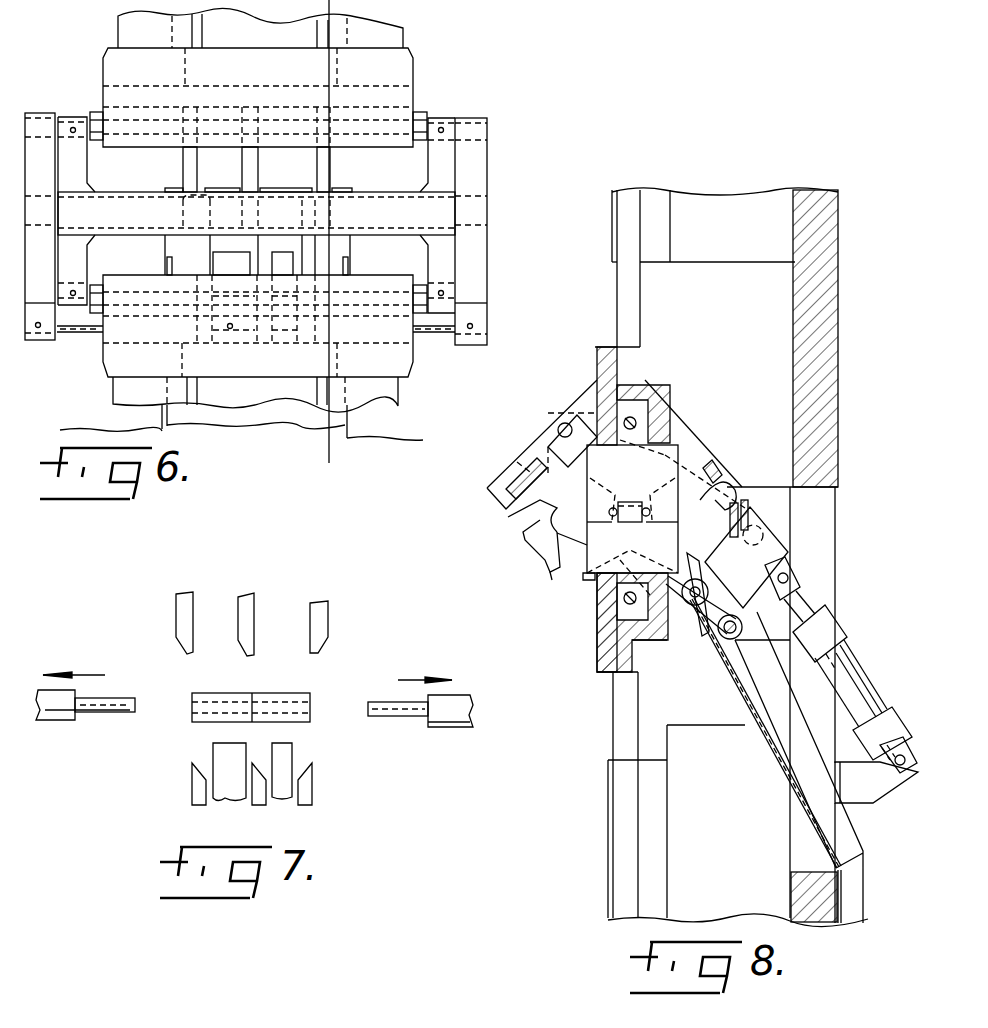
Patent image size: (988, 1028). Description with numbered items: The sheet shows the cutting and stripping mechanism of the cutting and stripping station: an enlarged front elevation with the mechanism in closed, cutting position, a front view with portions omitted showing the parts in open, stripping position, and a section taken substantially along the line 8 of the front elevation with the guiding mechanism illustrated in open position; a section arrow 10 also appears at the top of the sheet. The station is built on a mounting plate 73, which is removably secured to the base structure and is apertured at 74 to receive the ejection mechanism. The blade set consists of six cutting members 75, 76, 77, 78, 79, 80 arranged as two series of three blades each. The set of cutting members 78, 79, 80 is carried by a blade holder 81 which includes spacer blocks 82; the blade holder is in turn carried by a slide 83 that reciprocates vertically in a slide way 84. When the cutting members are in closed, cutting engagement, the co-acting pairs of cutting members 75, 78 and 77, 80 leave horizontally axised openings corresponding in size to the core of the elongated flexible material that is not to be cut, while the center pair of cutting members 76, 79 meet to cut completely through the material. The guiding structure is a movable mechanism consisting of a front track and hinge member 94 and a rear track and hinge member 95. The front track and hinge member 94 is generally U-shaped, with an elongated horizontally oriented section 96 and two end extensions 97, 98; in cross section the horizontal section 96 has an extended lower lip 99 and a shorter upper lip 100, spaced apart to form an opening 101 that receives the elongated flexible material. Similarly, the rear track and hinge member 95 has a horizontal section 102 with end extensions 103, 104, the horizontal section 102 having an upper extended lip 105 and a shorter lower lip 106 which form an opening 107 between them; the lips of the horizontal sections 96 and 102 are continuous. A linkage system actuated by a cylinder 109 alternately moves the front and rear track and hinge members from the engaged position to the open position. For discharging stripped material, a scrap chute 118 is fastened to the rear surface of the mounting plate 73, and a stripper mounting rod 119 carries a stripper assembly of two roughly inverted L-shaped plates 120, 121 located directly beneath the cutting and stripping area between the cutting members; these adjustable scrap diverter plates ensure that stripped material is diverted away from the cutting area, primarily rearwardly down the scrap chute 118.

In FIG. 6, the section line 8- 8 is at (293, 463).
In FIG. 6, the section arrow 10 is at (522, 5).
In FIG. 8, the mounting plate 73 is at (828, 340).
In FIG. 8, the aperture 74 is at (811, 873).
In FIG. 6, the cutting member 75 is at (184, 166).
In FIG. 7, the cutting member 75 is at (186, 598).
In FIG. 6, the cutting member 76 is at (246, 164).
In FIG. 7, the cutting member 76 is at (247, 598).
In FIG. 6, the cutting member 77 is at (331, 163).
In FIG. 7, the cutting member 77 is at (330, 603).
In FIG. 6, the cutting member 78 is at (200, 250).
In FIG. 7, the cutting member 78 is at (197, 793).
In FIG. 6, the cutting member 79 is at (262, 195).
In FIG. 7, the cutting member 79 is at (262, 810).
In FIG. 6, the cutting member 80 is at (310, 252).
In FIG. 7, the cutting member 80 is at (310, 786).
In FIG. 8, the blade holder 81 is at (617, 667).
In FIG. 8, the spacer blocks 82 is at (598, 663).
In FIG. 8, the slide 83 is at (620, 745).
In FIG. 8, the slide way 84 is at (608, 885).
In FIG. 8, the front track and hinge member 94 is at (492, 480).
In FIG. 8, the rear track and hinge member 95 is at (742, 592).
In FIG. 8, the horizontal section 96 is at (522, 508).
In FIG. 6, the end extension 97 is at (70, 117).
In FIG. 8, the end extension 97 is at (540, 447).
In FIG. 6, the end extension 98 is at (440, 120).
In FIG. 8, the lower lip 99 is at (553, 570).
In FIG. 8, the upper lip 100 is at (542, 470).
In FIG. 8, the opening 101 is at (520, 535).
In FIG. 8, the horizontal section 102 is at (765, 503).
In FIG. 6, the end extension 103 is at (78, 305).
In FIG. 8, the end extension 103 is at (770, 527).
In FIG. 6, the end extension 104 is at (480, 258).
In FIG. 8, the upper lip 105 is at (713, 467).
In FIG. 8, the lower lip 106 is at (703, 522).
In FIG. 8, the opening 107 is at (718, 490).
In FIG. 8, the cylinder 109 is at (870, 673).
In FIG. 6, the scrap chute 118 is at (297, 420).
In FIG. 8, the scrap chute 118 is at (850, 917).
In FIG. 6, the stripper mounting rod 119 is at (437, 330).
In FIG. 8, the stripper mounting rod 119 is at (730, 633).
In FIG. 6, the inverted L-shaped plate 120 is at (230, 272).
In FIG. 7, the inverted L-shaped plate 120 is at (215, 750).
In FIG. 8, the inverted L-shaped plate 120 is at (588, 577).
In FIG. 6, the inverted L-shaped plate 121 is at (285, 272).
In FIG. 7, the inverted L-shaped plate 121 is at (290, 757).